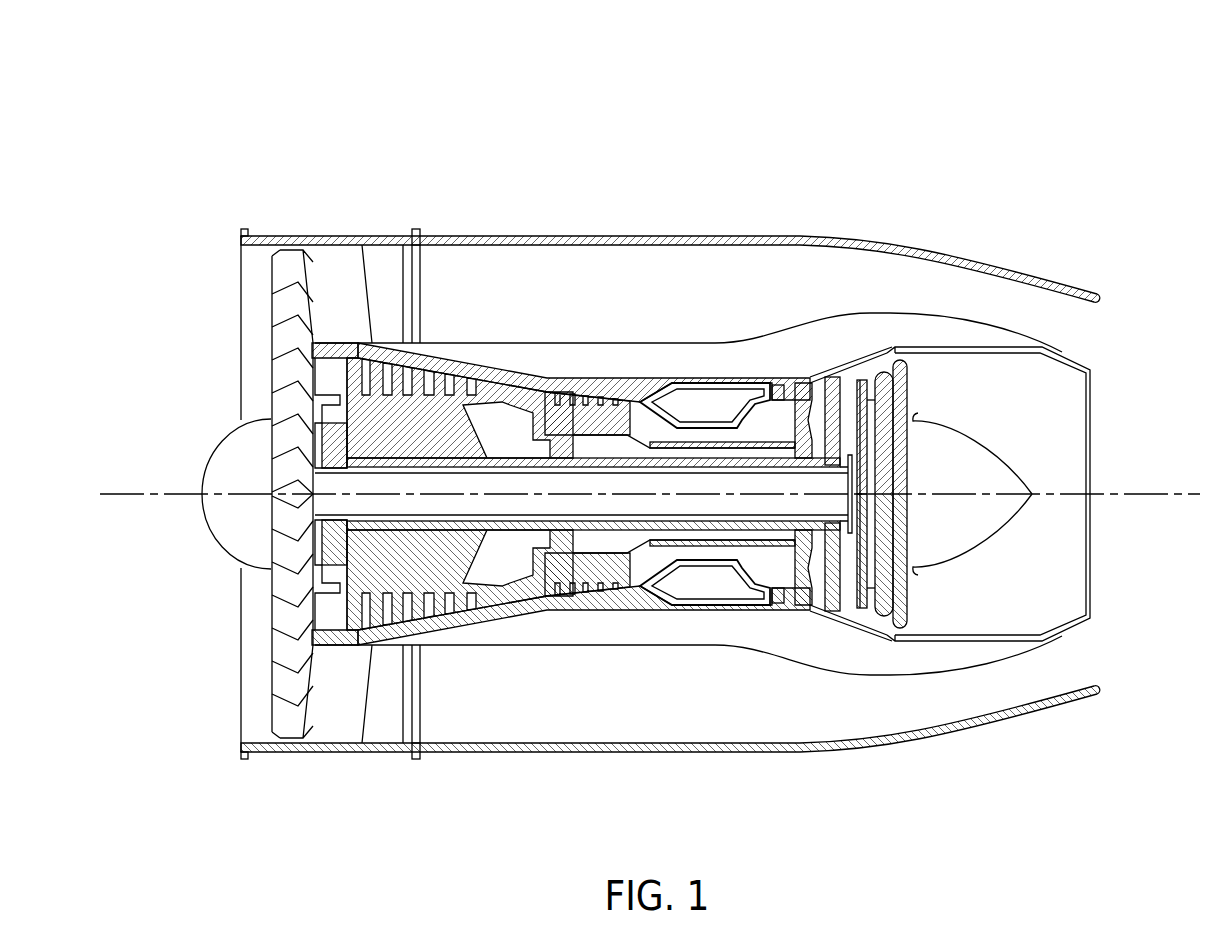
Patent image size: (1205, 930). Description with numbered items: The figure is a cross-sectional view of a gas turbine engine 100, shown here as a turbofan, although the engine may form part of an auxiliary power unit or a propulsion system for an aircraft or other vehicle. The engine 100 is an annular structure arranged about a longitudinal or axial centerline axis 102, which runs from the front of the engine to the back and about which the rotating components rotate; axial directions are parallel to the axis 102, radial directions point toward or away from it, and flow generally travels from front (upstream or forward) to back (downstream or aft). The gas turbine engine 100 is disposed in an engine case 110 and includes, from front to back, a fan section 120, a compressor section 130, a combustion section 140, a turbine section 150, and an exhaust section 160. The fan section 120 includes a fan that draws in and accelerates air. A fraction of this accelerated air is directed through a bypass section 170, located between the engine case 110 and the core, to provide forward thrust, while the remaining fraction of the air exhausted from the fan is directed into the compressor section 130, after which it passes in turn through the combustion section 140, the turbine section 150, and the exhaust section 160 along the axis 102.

The gas turbine engine 100 is at (471, 128).
The longitudinal or axial centerline axis 102 is at (1163, 466).
The engine case 110 is at (482, 237).
The fan section 120 is at (347, 779).
The compressor section 130 is at (645, 779).
The combustion section 140 is at (785, 779).
The turbine section 150 is at (892, 779).
The exhaust section 160 is at (1083, 779).
The bypass section 170 is at (592, 263).